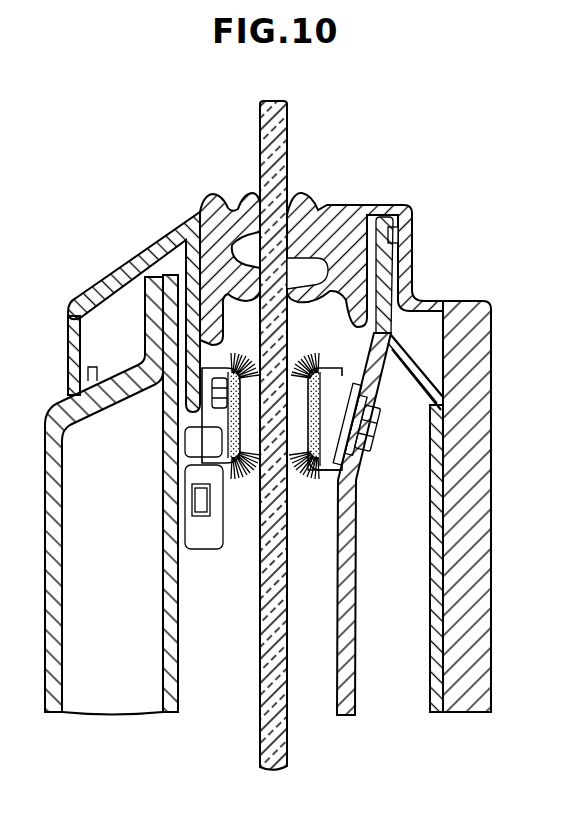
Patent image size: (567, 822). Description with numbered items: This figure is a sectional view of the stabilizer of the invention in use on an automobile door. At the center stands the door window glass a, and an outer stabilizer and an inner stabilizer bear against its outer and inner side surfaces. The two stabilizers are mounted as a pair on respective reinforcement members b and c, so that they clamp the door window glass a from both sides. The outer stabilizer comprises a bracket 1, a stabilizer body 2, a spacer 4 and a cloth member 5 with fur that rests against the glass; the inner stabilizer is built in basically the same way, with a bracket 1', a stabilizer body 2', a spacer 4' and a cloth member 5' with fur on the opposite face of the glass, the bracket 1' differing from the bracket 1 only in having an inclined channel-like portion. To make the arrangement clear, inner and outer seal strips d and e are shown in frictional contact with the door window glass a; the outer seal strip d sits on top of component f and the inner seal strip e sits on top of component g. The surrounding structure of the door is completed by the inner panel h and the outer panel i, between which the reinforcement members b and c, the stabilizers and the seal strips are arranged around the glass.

The door window glass a is at (286, 117).
The reinforcement member b is at (352, 522).
The reinforcement member c is at (173, 632).
The outer seal strip d is at (205, 206).
The inner seal strip e is at (345, 205).
The component f is at (73, 300).
The component g is at (484, 333).
The inner panel h is at (437, 677).
The outer panel i is at (50, 630).
The bracket 1 is at (185, 415).
The stabilizer body 2 is at (207, 526).
The spacer 4 is at (179, 423).
The cloth member with fur 5 is at (246, 441).
The bracket 1' is at (325, 490).
The stabilizer body 2' is at (330, 405).
The spacer 4' is at (356, 433).
The cloth member with fur 5' is at (313, 392).